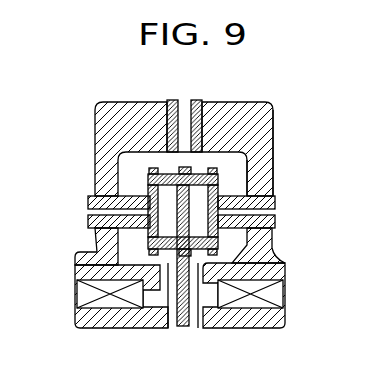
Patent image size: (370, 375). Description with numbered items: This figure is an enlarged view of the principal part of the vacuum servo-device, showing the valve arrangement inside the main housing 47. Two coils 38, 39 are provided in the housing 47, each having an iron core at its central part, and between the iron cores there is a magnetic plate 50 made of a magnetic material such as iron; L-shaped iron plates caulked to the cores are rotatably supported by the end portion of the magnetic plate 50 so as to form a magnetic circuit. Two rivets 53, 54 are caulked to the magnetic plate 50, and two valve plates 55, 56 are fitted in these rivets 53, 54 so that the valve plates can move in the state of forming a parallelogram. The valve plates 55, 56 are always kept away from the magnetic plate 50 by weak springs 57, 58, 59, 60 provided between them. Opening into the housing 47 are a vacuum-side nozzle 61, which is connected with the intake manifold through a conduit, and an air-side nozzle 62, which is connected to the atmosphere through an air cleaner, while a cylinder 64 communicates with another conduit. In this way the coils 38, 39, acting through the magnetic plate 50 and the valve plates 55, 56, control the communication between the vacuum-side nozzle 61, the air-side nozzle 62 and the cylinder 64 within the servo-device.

The coil 38 is at (95, 304).
The coil 39 is at (256, 287).
The main housing 47 is at (260, 176).
The magnetic plate 50 is at (189, 305).
The rivet 53 is at (218, 177).
The rivet 54 is at (167, 295).
The valve plate 55 is at (100, 235).
The valve plate 56 is at (246, 232).
The weak spring 57 is at (165, 171).
The weak spring 58 is at (240, 110).
The weak spring 59 is at (74, 260).
The weak spring 60 is at (279, 258).
The vacuum-side nozzle 61 is at (97, 190).
The air-side nozzle 62 is at (245, 212).
The cylinder 64 is at (196, 170).